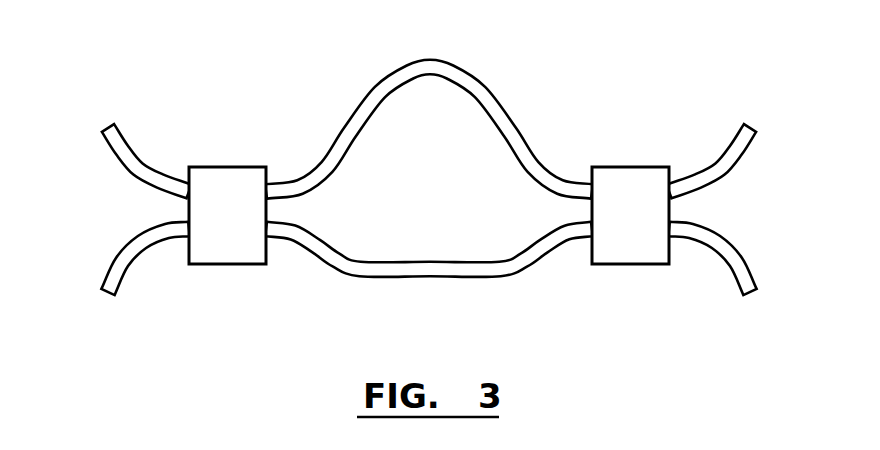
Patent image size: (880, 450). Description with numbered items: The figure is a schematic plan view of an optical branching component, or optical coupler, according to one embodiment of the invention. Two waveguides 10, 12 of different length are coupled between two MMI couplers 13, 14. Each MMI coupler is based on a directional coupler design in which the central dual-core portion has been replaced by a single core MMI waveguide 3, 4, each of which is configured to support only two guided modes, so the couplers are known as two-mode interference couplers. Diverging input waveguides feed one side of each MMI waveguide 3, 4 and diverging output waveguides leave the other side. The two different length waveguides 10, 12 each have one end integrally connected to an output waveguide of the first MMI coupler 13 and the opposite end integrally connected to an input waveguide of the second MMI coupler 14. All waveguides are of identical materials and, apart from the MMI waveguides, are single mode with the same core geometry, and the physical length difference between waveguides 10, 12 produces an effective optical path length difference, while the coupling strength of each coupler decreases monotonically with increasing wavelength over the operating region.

The waveguide 10 is at (492, 97).
The waveguide 12 is at (515, 258).
The MMI waveguide 3 is at (227, 185).
The MMI waveguide 4 is at (629, 190).
The MMI coupler 13 is at (183, 225).
The MMI coupler 14 is at (674, 225).